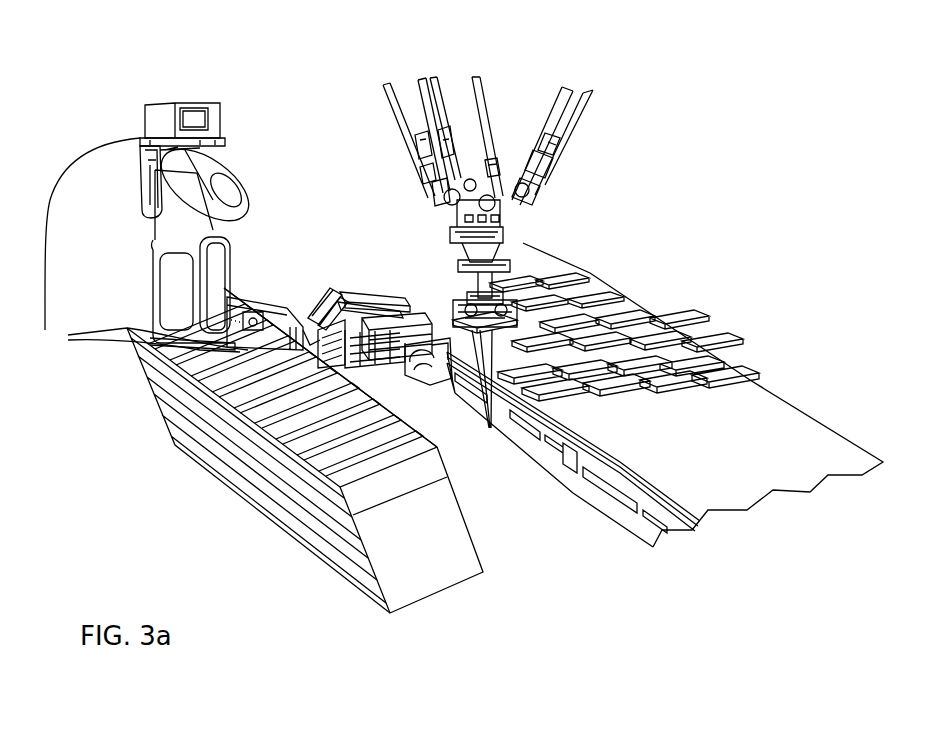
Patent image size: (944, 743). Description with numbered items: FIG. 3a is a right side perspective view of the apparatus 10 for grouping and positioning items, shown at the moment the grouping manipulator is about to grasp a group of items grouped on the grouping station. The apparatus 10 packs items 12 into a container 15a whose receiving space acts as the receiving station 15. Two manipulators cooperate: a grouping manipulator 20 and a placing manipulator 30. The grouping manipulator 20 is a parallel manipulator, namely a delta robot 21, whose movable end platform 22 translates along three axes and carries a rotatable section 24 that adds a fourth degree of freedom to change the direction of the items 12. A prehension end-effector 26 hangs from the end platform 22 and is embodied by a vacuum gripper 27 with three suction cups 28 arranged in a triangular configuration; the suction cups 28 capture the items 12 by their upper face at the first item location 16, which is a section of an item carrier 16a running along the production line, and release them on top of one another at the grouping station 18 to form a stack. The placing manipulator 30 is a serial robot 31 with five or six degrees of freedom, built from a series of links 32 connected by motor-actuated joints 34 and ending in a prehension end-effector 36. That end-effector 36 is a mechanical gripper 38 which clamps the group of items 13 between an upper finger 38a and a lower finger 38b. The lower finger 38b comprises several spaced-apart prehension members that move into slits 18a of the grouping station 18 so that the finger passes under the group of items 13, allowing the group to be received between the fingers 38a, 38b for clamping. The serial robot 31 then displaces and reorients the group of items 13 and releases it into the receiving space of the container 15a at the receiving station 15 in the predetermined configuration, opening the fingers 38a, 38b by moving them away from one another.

The apparatus 10 is at (104, 102).
The items 12 is at (717, 374).
The group of items 13 is at (423, 352).
The receiving station 15 is at (296, 417).
The container 15a is at (268, 505).
The first item location 16 is at (442, 315).
The item carrier 16a is at (787, 412).
The grouping station 18 is at (399, 366).
The slits 18a is at (364, 364).
The grouping manipulator 20 is at (535, 97).
The delta robot 21 is at (603, 123).
The movable end platform 22 is at (478, 258).
The rotatable section 24 is at (502, 290).
The prehension end-effector 26 is at (452, 306).
The vacuum gripper 27 is at (462, 291).
The suction cups 28 is at (486, 389).
The placing manipulator 30 is at (245, 127).
The serial robot 31 is at (262, 169).
The links 32 is at (144, 340).
The motor-actuated joints 34 is at (146, 226).
The prehension end-effector 36 is at (312, 300).
The mechanical gripper 38 is at (344, 337).
The upper finger 38a is at (384, 304).
The lower finger 38b is at (345, 330).